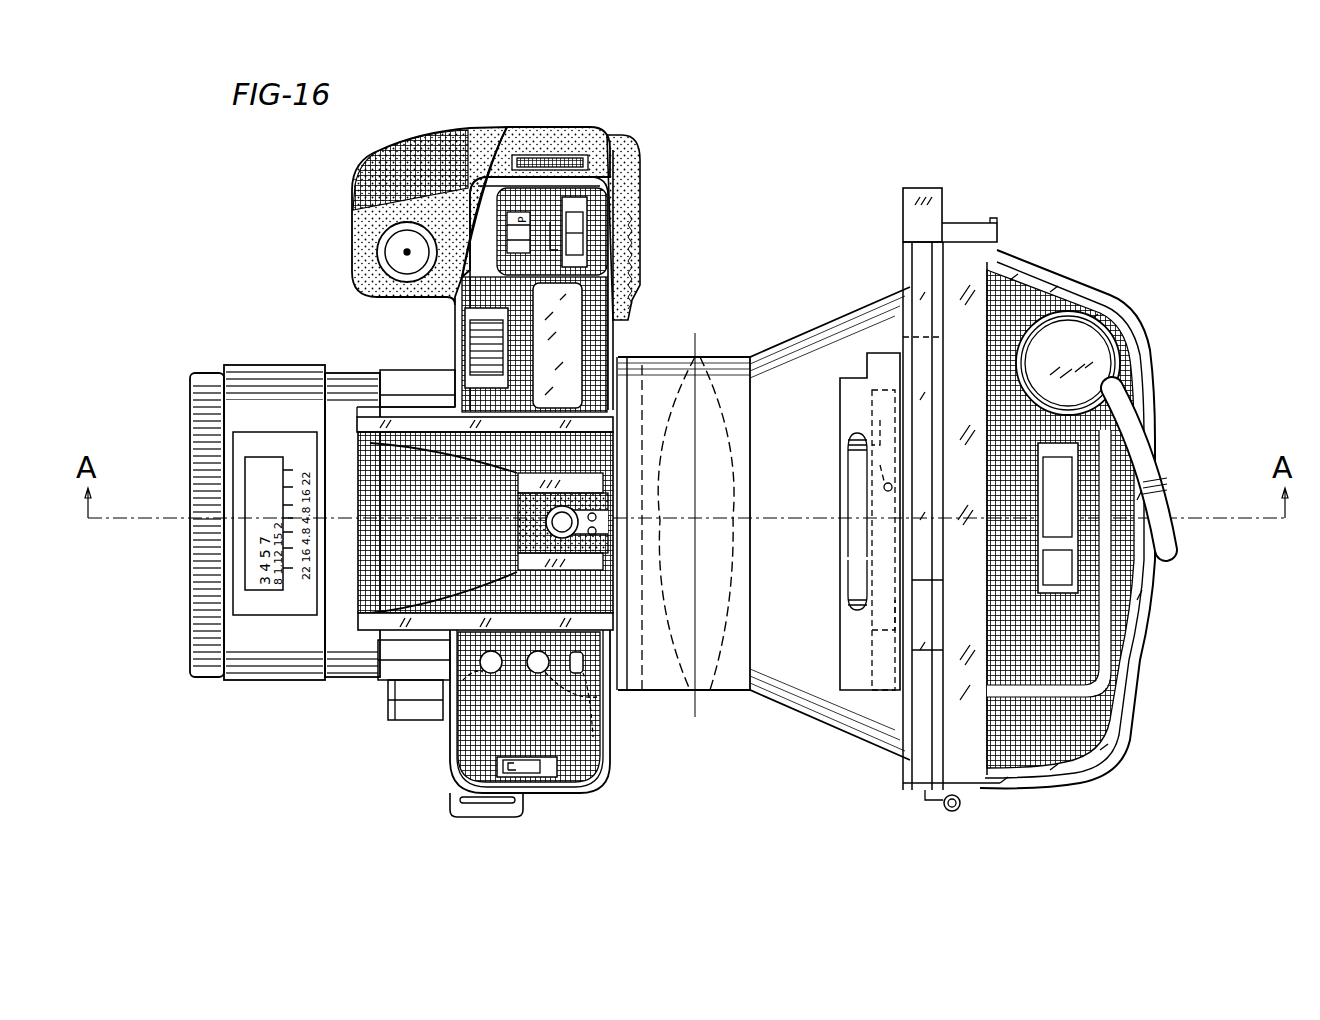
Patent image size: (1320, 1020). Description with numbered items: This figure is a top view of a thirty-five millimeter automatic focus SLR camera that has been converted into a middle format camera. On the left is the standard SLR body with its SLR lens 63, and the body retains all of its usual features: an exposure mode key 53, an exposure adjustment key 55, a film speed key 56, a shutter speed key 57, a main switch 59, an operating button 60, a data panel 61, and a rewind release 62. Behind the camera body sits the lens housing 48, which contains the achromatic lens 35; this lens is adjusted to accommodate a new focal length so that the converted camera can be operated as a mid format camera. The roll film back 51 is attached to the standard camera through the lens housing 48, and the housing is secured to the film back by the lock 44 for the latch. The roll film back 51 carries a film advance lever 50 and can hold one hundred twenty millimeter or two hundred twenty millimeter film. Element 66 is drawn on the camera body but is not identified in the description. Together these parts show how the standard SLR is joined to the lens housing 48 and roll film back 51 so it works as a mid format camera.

The achromatic lens 35 is at (703, 680).
The lock 44 is at (843, 548).
The lens housing 48 is at (833, 730).
The film advance lever 50 is at (1165, 475).
The roll film back 51 is at (1042, 811).
The exposure mode key 53 is at (465, 348).
The exposure adjustment key 55 is at (460, 727).
The film speed key 56 is at (593, 737).
The shutter speed key 57 is at (597, 697).
The main switch 59 is at (575, 250).
The operating button 60 is at (352, 283).
The data panel 61 is at (573, 343).
The rewind release 62 is at (533, 779).
The SLR lens 63 is at (200, 682).
The mounting tab 66 is at (455, 817).